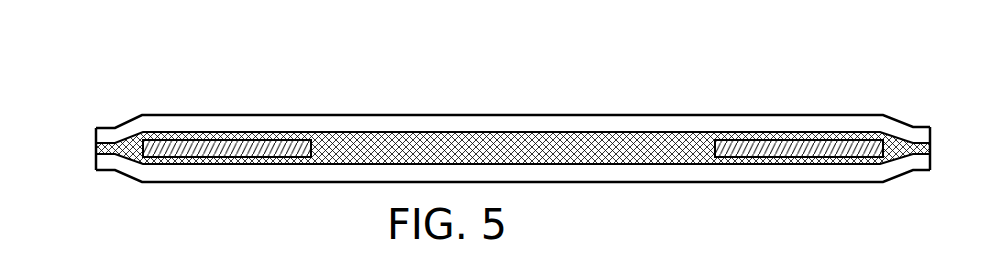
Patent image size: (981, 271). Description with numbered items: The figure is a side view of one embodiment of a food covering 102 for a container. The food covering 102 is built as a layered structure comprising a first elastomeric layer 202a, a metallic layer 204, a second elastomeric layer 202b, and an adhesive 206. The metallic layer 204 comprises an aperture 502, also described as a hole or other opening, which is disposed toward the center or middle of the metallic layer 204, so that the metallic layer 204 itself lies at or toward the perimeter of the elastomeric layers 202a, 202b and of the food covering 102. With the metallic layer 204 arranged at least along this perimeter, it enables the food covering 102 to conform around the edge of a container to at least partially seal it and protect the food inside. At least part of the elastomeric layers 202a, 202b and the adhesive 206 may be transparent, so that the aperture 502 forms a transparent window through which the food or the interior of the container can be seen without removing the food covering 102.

The food covering 102 is at (99, 78).
The first elastomeric layer 202a is at (220, 116).
The second elastomeric layer 202b is at (182, 172).
The metallic layer 204 is at (248, 148).
The adhesive 206 is at (121, 150).
The aperture 502 is at (360, 148).